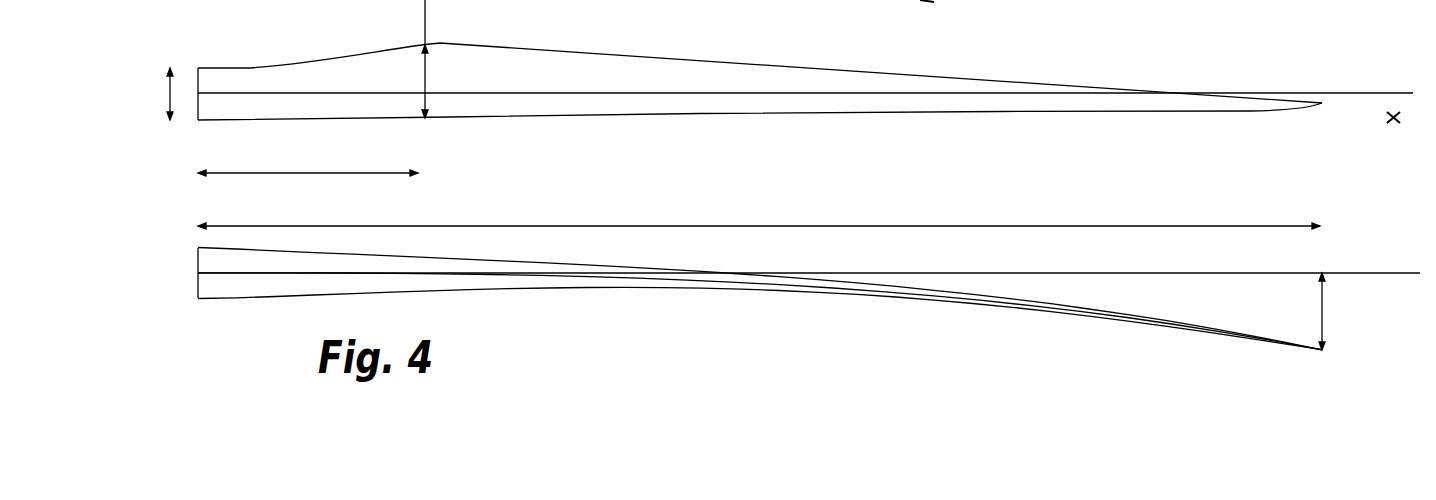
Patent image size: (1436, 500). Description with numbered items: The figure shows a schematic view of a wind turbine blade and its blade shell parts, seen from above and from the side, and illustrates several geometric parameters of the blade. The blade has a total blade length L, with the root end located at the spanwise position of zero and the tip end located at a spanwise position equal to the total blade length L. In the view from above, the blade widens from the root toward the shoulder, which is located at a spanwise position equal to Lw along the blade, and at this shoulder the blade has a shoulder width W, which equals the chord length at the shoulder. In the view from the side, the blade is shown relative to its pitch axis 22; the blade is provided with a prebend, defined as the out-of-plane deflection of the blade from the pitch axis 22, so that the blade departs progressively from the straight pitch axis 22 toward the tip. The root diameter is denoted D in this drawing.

The pitch axis 22 is at (643, 93).
The shoulder width W is at (437, 59).
The blade depth D is at (161, 94).
The total blade length L is at (759, 216).
The shoulder position Lw is at (308, 162).